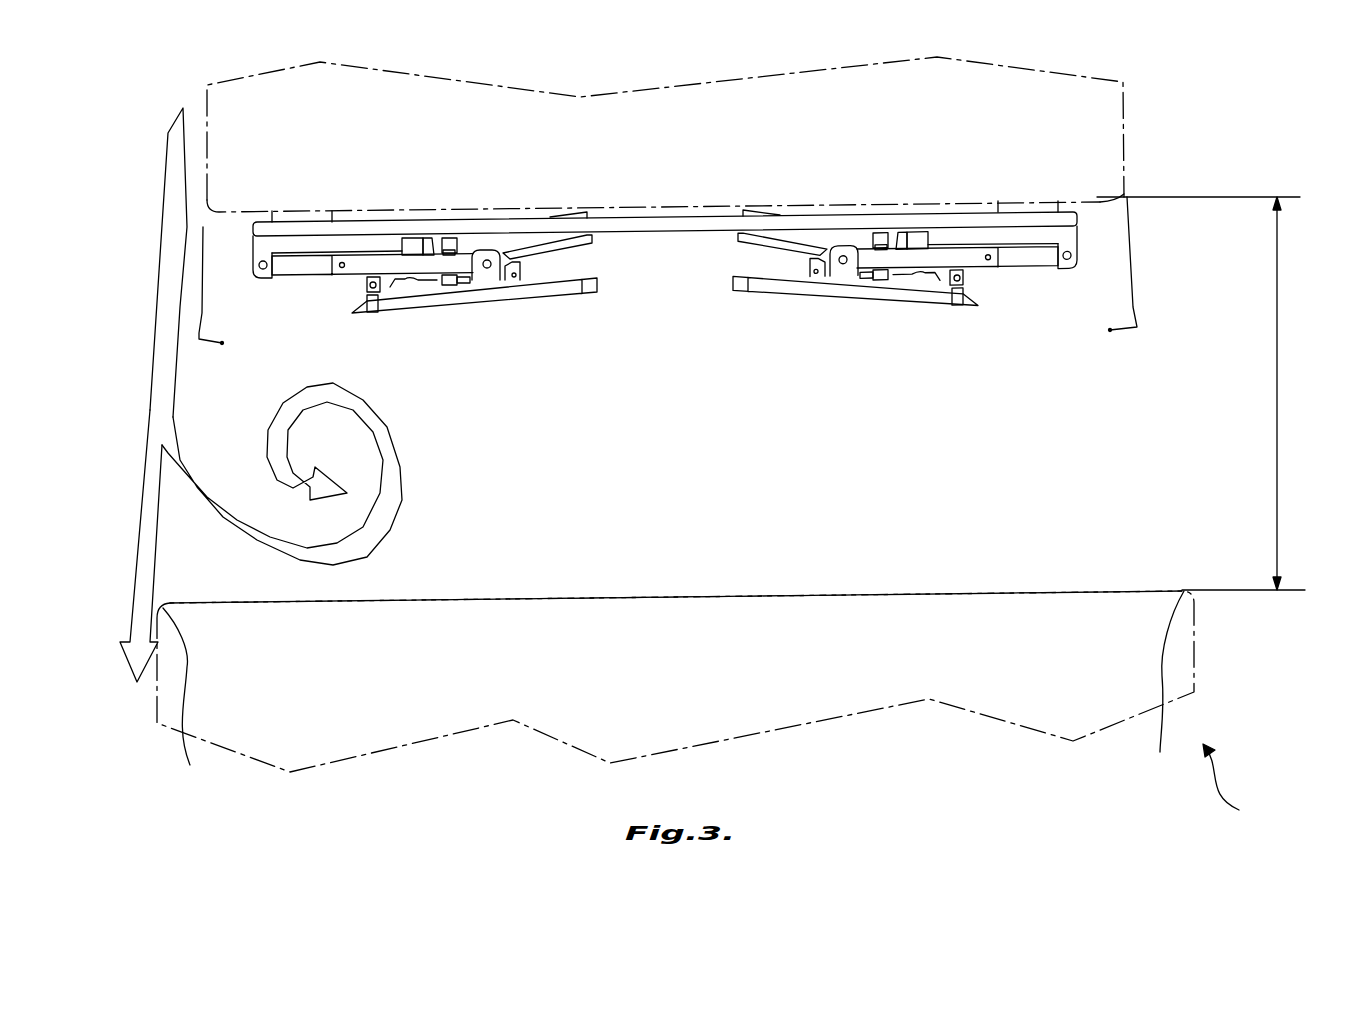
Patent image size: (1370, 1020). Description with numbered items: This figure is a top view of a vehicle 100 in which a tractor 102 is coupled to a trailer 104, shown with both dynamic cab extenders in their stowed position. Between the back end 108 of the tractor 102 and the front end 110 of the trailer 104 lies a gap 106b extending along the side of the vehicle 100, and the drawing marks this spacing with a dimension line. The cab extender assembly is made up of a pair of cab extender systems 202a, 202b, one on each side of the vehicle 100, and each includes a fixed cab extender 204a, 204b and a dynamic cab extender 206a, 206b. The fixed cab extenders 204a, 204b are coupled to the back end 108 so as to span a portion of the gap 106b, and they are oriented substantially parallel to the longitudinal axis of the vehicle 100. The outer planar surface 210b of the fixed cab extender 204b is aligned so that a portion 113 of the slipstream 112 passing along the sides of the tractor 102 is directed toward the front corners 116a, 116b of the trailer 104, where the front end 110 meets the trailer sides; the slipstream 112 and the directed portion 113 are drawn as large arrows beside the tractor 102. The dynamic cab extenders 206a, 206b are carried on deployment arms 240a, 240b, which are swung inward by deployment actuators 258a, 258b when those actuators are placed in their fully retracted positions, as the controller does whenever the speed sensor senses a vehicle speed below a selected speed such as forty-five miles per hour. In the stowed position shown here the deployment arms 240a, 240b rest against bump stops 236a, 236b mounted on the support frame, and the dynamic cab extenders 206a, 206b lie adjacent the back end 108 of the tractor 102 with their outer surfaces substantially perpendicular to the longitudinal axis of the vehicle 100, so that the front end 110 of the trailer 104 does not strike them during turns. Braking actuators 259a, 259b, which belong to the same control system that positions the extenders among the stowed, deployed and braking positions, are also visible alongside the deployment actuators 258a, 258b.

The vehicle 100 is at (1238, 782).
The tractor 102 is at (1123, 140).
The trailer 104 is at (1196, 667).
The gap 106b is at (1278, 362).
The back end of the tractor 108 is at (1097, 200).
The front end of the trailer 110 is at (982, 590).
The slipstream 112 is at (176, 187).
The portion of the slipstream 113 is at (143, 522).
The front corner of the trailer 116a is at (189, 699).
The front corner of the trailer 116b is at (1160, 685).
The cab extender system 202a is at (435, 457).
The cab extender system 202b is at (1135, 450).
The fixed cab extender 204a is at (203, 312).
The fixed cab extender 204b is at (1130, 267).
The dynamic cab extender 206a is at (447, 300).
The dynamic cab extender 206b is at (888, 300).
The outer planar surface 210b is at (1133, 307).
The bump stop 236a is at (448, 256).
The bump stop 236b is at (887, 249).
The deployment arm 240a is at (355, 267).
The deployment arm 240b is at (980, 258).
The deployment actuator 258a is at (510, 248).
The deployment actuator 258b is at (825, 243).
The braking actuator 259a is at (470, 283).
The braking actuator 259b is at (862, 278).